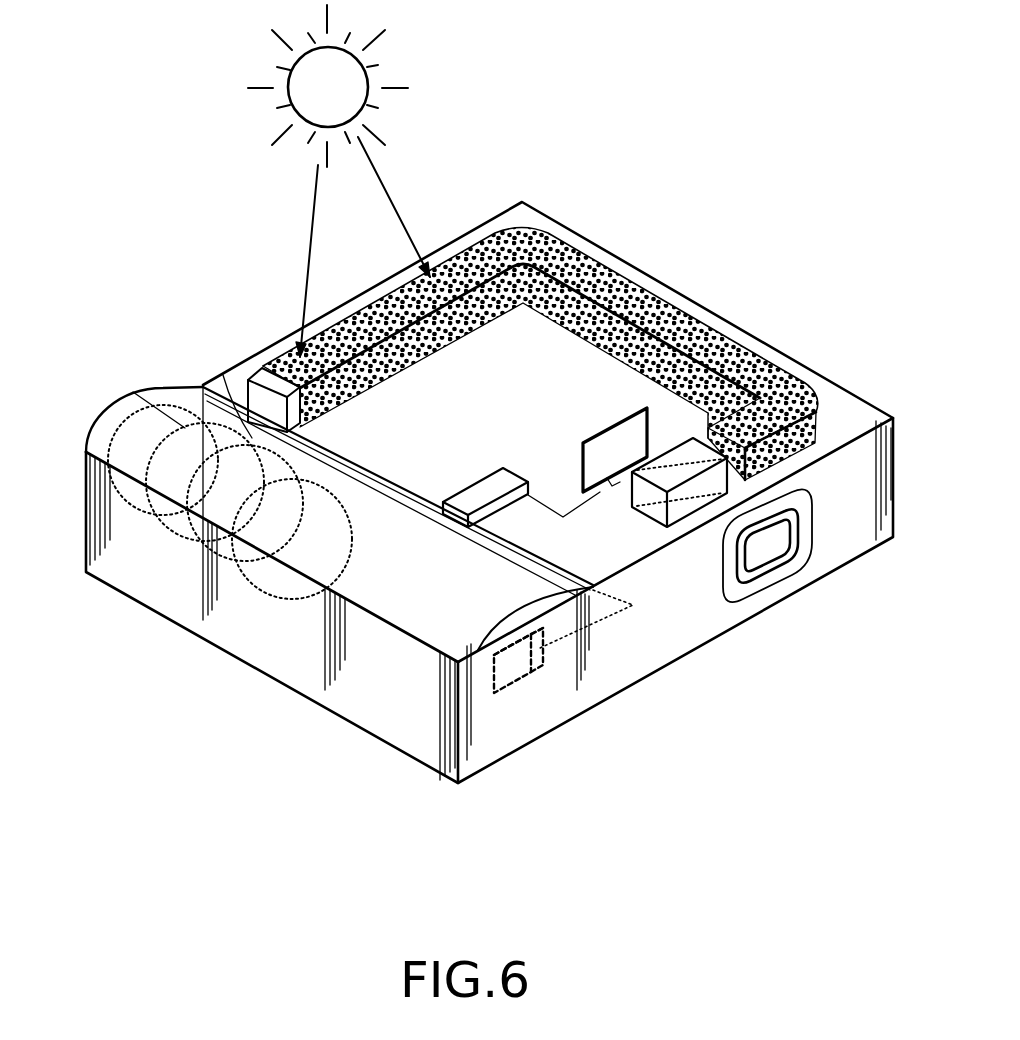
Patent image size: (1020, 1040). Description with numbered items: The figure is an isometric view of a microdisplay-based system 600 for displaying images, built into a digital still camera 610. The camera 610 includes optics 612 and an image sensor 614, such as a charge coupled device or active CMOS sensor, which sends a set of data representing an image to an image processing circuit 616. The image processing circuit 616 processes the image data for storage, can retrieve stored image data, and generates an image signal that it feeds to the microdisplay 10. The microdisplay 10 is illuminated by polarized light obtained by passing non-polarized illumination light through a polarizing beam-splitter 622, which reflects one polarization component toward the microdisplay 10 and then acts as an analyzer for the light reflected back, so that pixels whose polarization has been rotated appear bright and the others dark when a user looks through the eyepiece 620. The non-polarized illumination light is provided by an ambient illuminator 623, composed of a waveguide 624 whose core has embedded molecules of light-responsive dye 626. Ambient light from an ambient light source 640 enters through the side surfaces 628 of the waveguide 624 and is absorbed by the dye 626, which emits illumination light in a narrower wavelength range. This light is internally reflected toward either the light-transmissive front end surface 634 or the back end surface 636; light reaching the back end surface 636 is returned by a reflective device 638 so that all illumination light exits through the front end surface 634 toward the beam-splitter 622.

The microdisplay-based system 600 is at (750, 697).
The digital still camera 610 is at (267, 718).
The optics 612 is at (157, 545).
The image sensor 614 is at (522, 672).
The image processing circuit 616 is at (500, 480).
The microdisplay 10 is at (582, 458).
The eyepiece 620 is at (758, 572).
The polarizing beam-splitter 622 is at (687, 505).
The ambient illuminator 623 is at (591, 374).
The waveguide 624 is at (692, 316).
The light-responsive dye 626 is at (455, 265).
The side surfaces 628 is at (606, 285).
The light-transmissive front end surface 634 is at (745, 468).
The back end surface 636 is at (255, 402).
The reflective device 638 is at (223, 377).
The ambient light source 640 is at (393, 110).